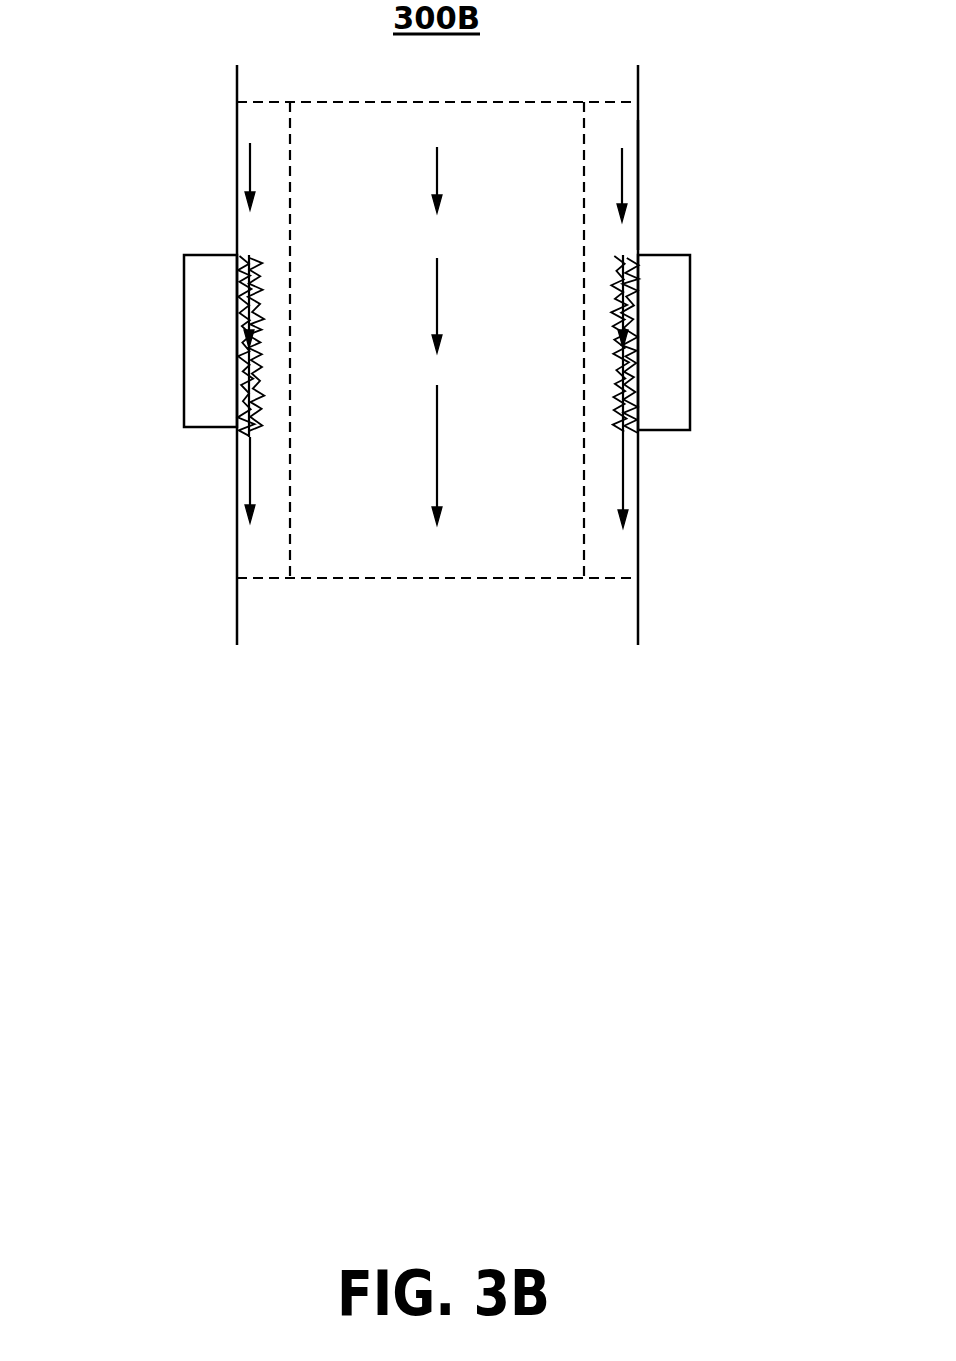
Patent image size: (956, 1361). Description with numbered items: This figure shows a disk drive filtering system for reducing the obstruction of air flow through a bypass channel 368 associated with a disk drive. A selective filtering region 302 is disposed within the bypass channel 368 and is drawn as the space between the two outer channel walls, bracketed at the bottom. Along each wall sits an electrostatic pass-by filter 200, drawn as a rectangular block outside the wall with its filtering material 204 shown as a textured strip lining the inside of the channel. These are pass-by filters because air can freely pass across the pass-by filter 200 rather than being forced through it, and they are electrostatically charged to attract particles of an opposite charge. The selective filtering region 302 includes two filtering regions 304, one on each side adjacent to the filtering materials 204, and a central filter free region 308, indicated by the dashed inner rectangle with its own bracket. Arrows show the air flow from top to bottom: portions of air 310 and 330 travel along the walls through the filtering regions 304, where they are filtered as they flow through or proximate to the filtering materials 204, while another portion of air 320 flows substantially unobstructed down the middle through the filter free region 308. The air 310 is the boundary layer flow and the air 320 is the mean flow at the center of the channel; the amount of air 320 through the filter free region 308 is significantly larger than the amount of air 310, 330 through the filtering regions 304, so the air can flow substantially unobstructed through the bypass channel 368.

The electrostatic pass-by filter 200 is at (208, 352).
The filtering material 204 is at (243, 378).
The selective filtering region 302 is at (638, 627).
The filtering region 304 is at (262, 325).
The filter free region 308 is at (584, 578).
The portion of air 310 is at (248, 161).
The portion of air 320 is at (438, 162).
The portion of air 330 is at (624, 158).
The bypass channel 368 is at (640, 185).